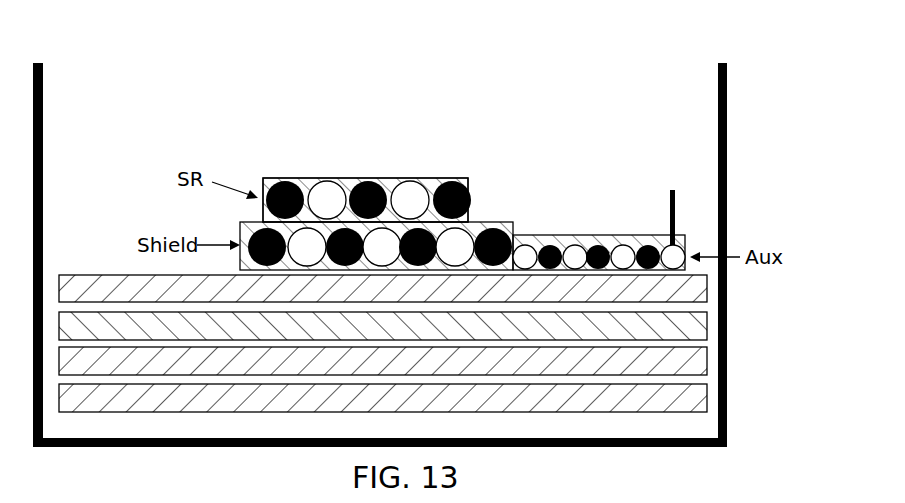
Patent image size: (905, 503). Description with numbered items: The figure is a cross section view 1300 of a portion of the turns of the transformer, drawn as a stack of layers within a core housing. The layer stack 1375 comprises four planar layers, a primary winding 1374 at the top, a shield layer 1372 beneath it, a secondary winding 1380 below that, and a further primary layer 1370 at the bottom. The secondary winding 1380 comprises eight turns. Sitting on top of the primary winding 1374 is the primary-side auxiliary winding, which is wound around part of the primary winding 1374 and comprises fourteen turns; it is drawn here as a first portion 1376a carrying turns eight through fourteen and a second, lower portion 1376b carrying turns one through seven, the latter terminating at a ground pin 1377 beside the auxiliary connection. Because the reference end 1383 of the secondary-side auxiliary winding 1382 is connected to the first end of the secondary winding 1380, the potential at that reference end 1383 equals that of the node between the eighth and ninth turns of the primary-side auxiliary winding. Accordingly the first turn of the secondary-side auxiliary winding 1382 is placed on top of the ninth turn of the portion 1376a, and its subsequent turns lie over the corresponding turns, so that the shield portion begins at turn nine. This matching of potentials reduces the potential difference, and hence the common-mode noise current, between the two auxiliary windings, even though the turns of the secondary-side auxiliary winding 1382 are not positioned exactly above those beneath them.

The cross section view 1300 is at (148, 78).
The printed circuit board layer stack 1375 is at (133, 405).
The primary winding 1374 is at (697, 292).
The shield layer 1372 is at (695, 323).
The secondary winding 1380 is at (695, 358).
The primary winding layer 1370 is at (697, 392).
The primary-side auxiliary winding 1376a is at (517, 200).
The primary-side auxiliary winding 1376b is at (558, 235).
The secondary-side auxiliary winding 1382 is at (388, 178).
The reference end 1383 is at (469, 178).
The ground pin 1377 is at (685, 240).